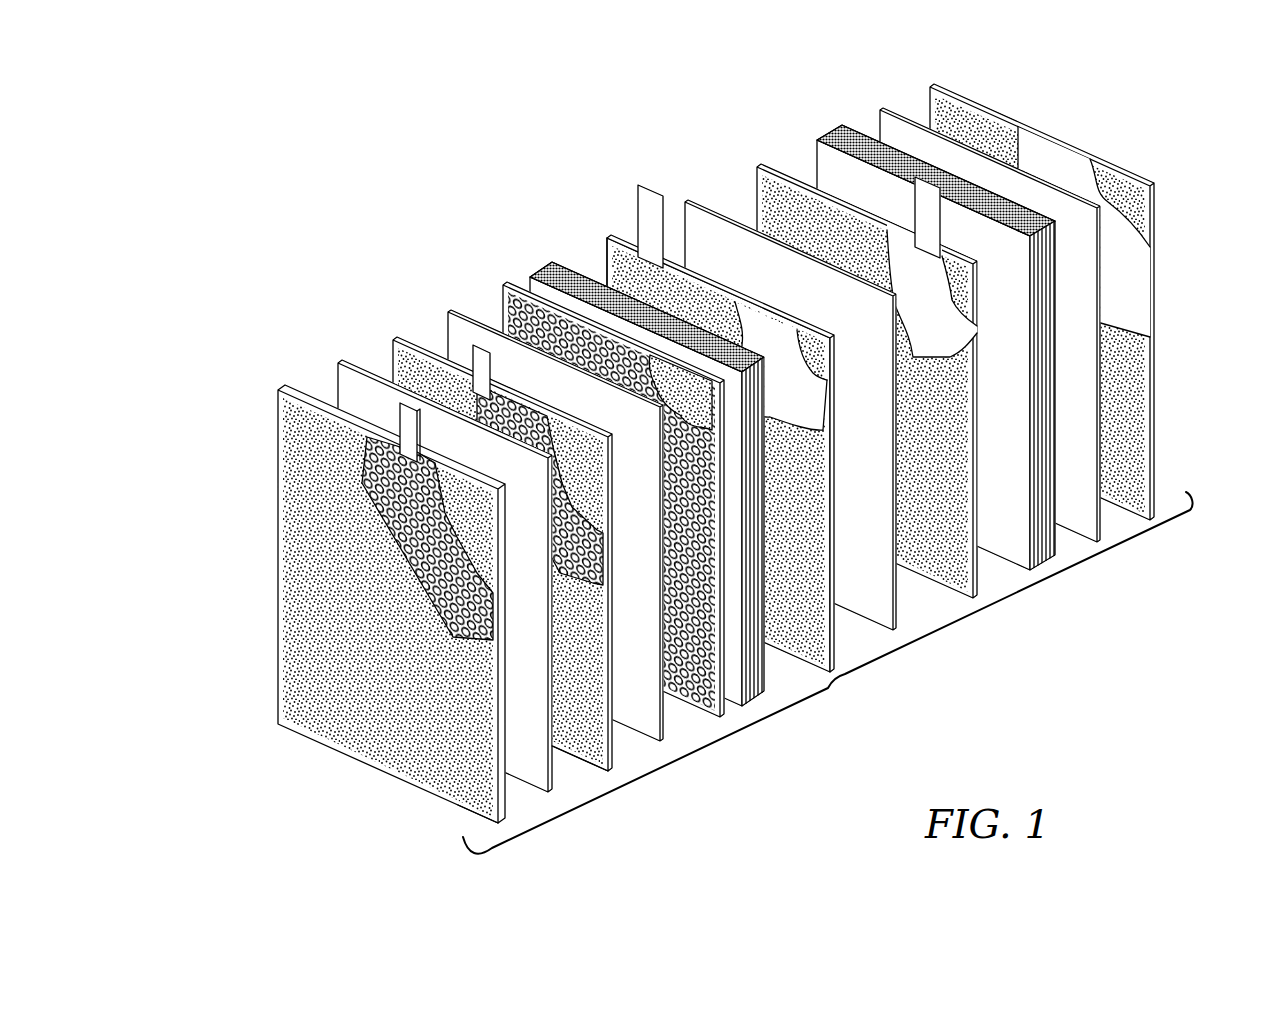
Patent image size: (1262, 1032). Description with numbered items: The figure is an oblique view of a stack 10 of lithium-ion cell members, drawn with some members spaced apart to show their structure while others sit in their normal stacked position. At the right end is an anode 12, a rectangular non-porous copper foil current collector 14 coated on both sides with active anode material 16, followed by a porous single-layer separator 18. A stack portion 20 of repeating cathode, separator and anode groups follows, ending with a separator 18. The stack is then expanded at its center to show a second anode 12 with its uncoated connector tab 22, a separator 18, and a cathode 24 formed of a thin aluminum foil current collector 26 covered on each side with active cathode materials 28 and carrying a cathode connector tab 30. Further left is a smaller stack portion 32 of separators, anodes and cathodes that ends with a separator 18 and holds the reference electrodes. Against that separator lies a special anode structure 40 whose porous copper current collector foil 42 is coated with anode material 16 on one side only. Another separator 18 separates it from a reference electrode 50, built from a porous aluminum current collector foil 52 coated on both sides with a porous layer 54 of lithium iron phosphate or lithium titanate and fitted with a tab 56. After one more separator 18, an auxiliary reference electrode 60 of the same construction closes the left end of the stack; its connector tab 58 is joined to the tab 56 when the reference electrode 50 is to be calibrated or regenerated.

The stack 10 is at (836, 686).
The anode 12 is at (748, 172).
The copper foil current collector 14 is at (1108, 289).
The active anode material 16 is at (767, 210).
The separator 18 is at (540, 287).
The stack portion 20 is at (826, 130).
The tab 22 is at (927, 210).
The cathode 24 is at (605, 228).
The aluminum foil 26 is at (785, 405).
The active cathode materials 28 is at (612, 262).
The cathode connector tab 30 is at (648, 207).
The stack portion 32 is at (560, 266).
The anode structure 40 is at (721, 732).
The porous copper current collector foil 42 is at (508, 315).
The reference electrode 50 is at (383, 335).
The porous aluminum current collector foil 52 is at (604, 572).
The porous layer 54 is at (477, 797).
The tab 56 is at (480, 350).
The connector tab 58 is at (405, 418).
The auxiliary reference electrode 60 is at (275, 382).